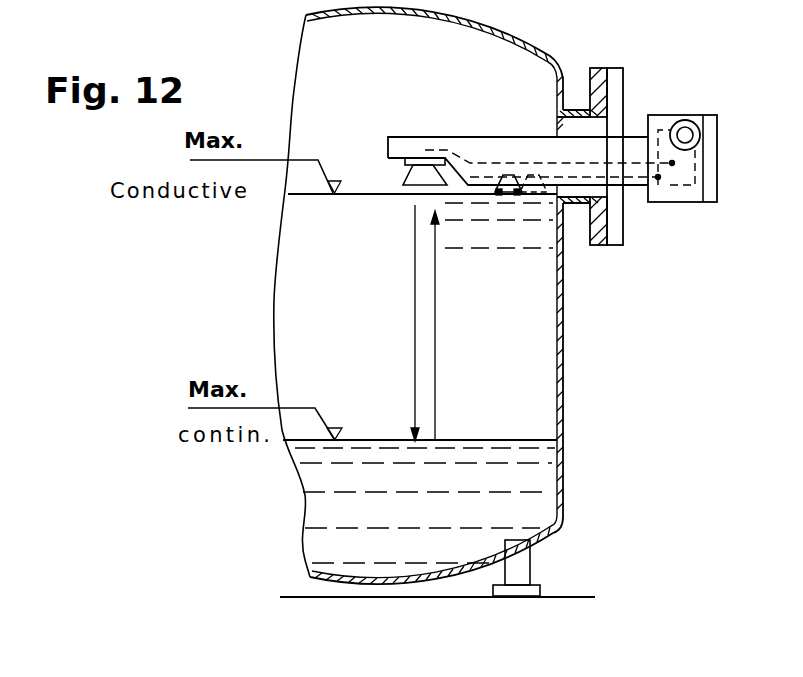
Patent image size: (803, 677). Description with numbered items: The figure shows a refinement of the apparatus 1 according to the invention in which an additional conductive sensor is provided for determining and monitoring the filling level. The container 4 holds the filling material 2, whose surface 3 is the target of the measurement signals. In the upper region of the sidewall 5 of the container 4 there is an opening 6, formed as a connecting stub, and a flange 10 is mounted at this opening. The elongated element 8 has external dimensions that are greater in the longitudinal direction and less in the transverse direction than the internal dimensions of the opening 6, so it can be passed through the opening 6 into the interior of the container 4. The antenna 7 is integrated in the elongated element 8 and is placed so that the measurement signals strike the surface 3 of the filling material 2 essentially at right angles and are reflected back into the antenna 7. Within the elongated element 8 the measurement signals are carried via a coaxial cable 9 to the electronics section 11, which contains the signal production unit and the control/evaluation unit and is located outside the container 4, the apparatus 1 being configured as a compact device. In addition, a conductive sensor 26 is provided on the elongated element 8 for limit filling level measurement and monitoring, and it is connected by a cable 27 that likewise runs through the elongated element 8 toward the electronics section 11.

The apparatus 1 is at (574, 50).
The filling material 2 is at (532, 481).
The surface of the filling material 3 is at (362, 440).
The container 4 is at (375, 354).
The sidewall 5 is at (563, 350).
The opening/connecting stub 6 is at (579, 210).
The antenna 7 is at (415, 192).
The elongated element 8 is at (462, 130).
The coaxial cable 9 is at (512, 132).
The flange 10 is at (617, 88).
The electronics section 11 is at (683, 170).
The conductive sensor 26 is at (498, 197).
The cable 27 is at (523, 200).